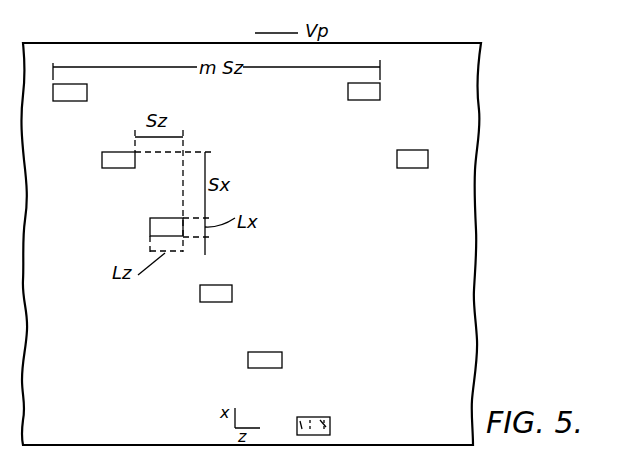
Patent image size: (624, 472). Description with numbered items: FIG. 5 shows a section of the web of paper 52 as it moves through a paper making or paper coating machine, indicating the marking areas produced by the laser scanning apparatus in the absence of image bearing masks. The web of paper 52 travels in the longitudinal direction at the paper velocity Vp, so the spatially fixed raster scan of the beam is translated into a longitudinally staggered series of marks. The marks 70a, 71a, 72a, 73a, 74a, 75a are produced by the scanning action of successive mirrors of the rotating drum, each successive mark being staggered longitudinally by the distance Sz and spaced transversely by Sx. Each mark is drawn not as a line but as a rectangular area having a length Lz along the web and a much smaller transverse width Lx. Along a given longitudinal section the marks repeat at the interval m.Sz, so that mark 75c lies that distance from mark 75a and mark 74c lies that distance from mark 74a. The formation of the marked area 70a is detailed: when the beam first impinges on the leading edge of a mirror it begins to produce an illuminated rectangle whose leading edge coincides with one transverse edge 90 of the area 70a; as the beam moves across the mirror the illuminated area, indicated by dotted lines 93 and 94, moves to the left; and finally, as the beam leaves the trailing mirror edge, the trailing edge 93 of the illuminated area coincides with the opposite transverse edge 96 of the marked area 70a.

The web of paper 52 is at (77, 50).
The mark 75a is at (67, 101).
The mark 75c is at (360, 100).
The mark 74a is at (118, 168).
The mark 74c is at (413, 168).
The mark 73a is at (150, 223).
The mark 72a is at (220, 302).
The mark 71a is at (248, 360).
The marked area 70a is at (330, 425).
The transverse edge of marked area 96 is at (300, 423).
The dotted line of illuminated area 94 is at (316, 417).
The transverse edge of marked area 90 is at (328, 423).
The trailing edge of illuminated area 93 is at (328, 430).